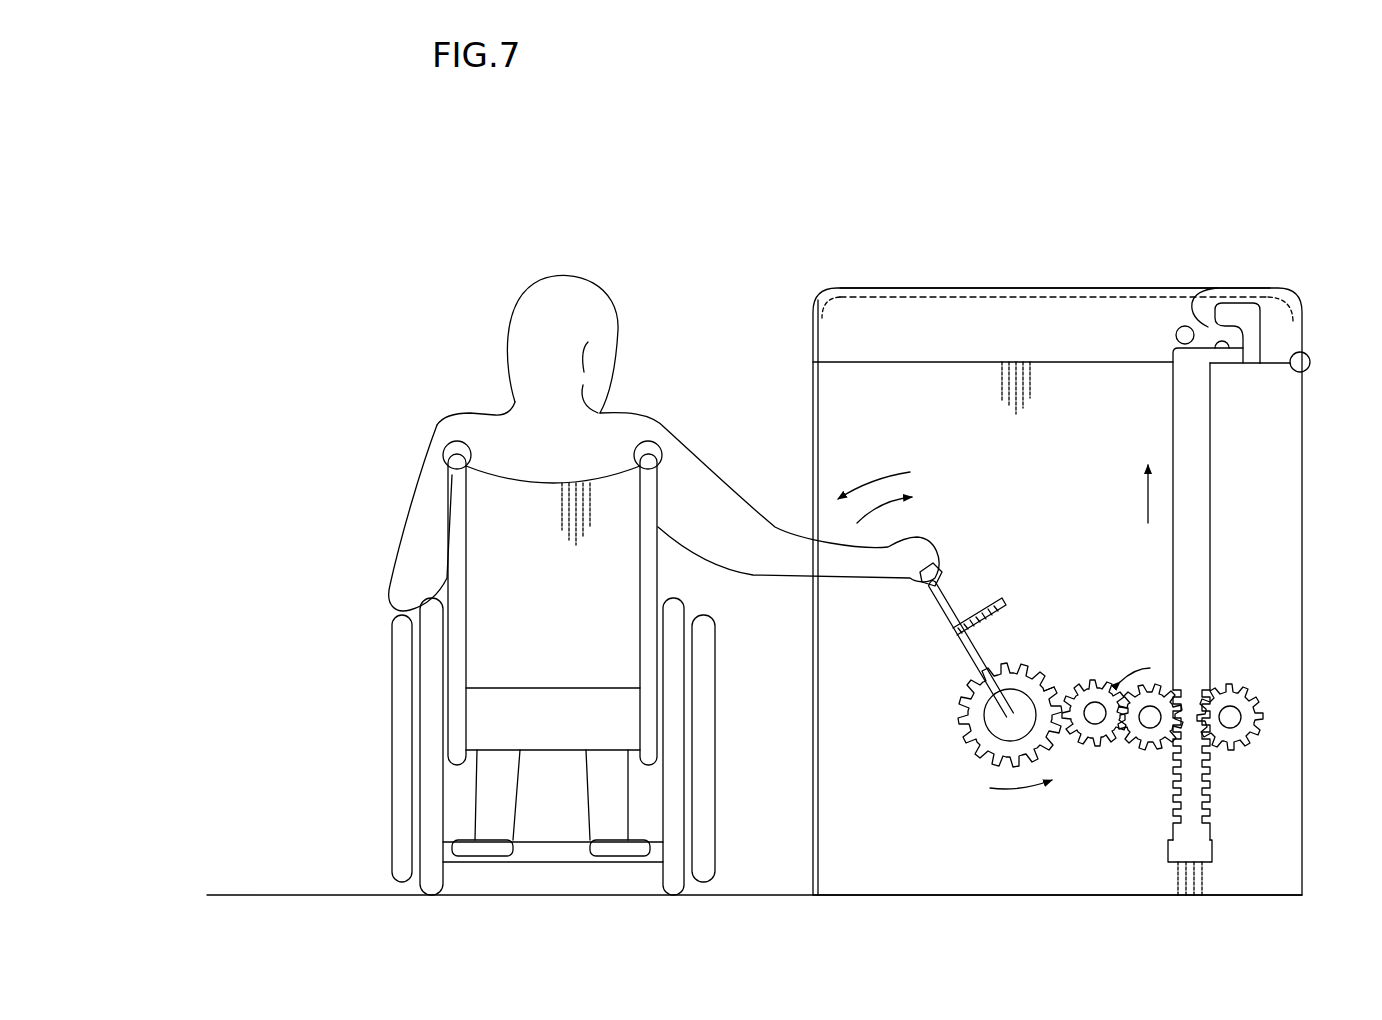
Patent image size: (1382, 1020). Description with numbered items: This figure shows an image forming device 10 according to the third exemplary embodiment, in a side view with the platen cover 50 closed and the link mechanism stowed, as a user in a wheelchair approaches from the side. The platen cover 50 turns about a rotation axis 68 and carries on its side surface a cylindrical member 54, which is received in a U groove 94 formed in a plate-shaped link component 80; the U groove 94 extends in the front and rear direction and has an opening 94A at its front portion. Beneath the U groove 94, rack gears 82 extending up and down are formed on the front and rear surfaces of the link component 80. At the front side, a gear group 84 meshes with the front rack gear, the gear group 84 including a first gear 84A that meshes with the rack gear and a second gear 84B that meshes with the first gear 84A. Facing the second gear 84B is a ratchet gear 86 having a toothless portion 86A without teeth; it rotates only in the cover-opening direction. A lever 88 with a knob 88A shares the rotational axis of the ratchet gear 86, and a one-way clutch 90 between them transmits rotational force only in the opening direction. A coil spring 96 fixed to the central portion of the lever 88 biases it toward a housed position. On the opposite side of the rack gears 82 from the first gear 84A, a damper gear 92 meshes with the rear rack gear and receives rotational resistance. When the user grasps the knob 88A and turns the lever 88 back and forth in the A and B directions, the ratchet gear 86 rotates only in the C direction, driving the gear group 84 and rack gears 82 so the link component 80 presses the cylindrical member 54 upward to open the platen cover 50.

The image forming device 10 is at (823, 162).
The platen cover 50 is at (1068, 298).
The cylindrical member 54 is at (1175, 337).
The rotation axis 68 is at (1311, 363).
The link component 80 is at (1200, 533).
The rack gears 82 is at (1195, 832).
The gear group 84 is at (1163, 814).
The first gear 84A is at (1148, 745).
The second gear 84B is at (1080, 745).
The ratchet gear 86 is at (975, 746).
The toothless portion 86A is at (1058, 688).
The lever 88 is at (937, 615).
The knob 88A is at (948, 566).
The one-way clutch 90 is at (984, 717).
The damper gear 92 is at (1243, 690).
The U groove 94 is at (1226, 352).
The opening 94A is at (1308, 260).
The coil spring 96 is at (970, 612).